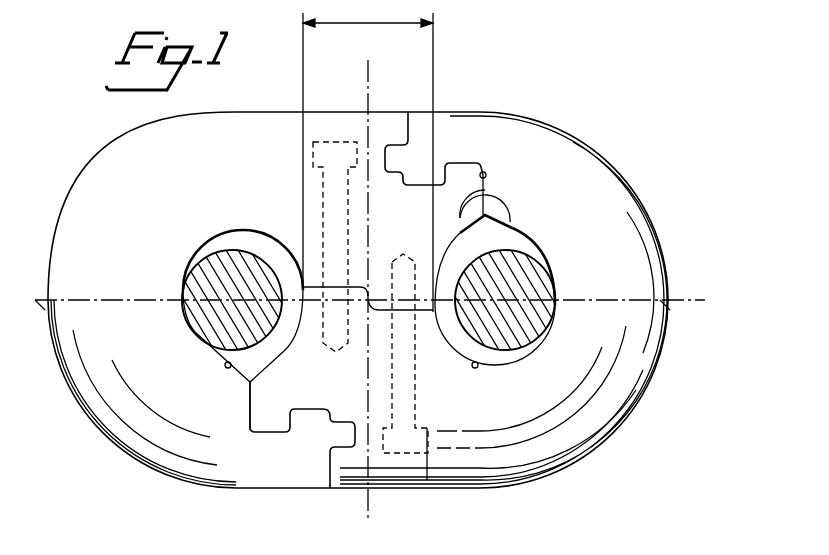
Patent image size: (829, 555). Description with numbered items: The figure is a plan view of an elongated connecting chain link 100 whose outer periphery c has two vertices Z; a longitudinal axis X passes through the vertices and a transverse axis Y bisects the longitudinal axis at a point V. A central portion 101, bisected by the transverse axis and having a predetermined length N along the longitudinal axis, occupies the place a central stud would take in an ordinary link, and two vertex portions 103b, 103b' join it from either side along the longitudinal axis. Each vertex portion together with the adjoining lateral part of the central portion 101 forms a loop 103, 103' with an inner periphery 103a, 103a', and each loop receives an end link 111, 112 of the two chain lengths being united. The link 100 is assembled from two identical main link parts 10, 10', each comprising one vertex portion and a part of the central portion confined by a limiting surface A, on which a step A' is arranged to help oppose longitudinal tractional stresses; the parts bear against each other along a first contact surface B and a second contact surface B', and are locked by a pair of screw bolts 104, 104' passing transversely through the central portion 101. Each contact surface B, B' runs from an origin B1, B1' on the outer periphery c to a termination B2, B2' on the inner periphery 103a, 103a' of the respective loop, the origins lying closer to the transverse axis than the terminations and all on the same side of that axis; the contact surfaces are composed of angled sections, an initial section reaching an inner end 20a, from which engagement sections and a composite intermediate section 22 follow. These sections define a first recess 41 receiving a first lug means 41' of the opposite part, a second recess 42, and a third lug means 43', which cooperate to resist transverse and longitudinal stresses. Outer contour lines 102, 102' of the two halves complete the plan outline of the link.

The connecting chain link 100 is at (603, 118).
The main link part 10 is at (652, 276).
The main link part 10' is at (140, 405).
The outer wall 102 is at (525, 404).
The outer wall 102' is at (127, 397).
The loop 103 is at (498, 290).
The loop 103' is at (240, 295).
The inner periphery 103a is at (457, 381).
The inner periphery 103a' is at (202, 379).
The vertex portion 103b is at (535, 357).
The vertex portion 103b' is at (125, 279).
The screw bolt 104 is at (387, 367).
The screw bolt 104' is at (315, 247).
The central portion 101 is at (362, 290).
The chain link 111 is at (232, 300).
The chain link 112 is at (505, 300).
The first recess 41 is at (306, 453).
The first lug means 41' is at (374, 97).
The second recess 42 is at (434, 148).
The third lug means 43' is at (453, 158).
The composite intermediate section 22 is at (392, 181).
The inner end 20a is at (424, 116).
The limiting surface A is at (405, 327).
The step A' is at (342, 280).
The first contact surface B is at (494, 165).
The second contact surface B' is at (315, 441).
The origin B1 is at (423, 98).
The origin B1' is at (315, 504).
The termination B2 is at (468, 214).
The termination B2' is at (268, 402).
The point V is at (366, 303).
The predetermined length N is at (368, 56).
The longitudinal axis X is at (364, 289).
The transverse axis Y is at (377, 287).
The vertex Z is at (355, 315).
The outer periphery c is at (170, 125).